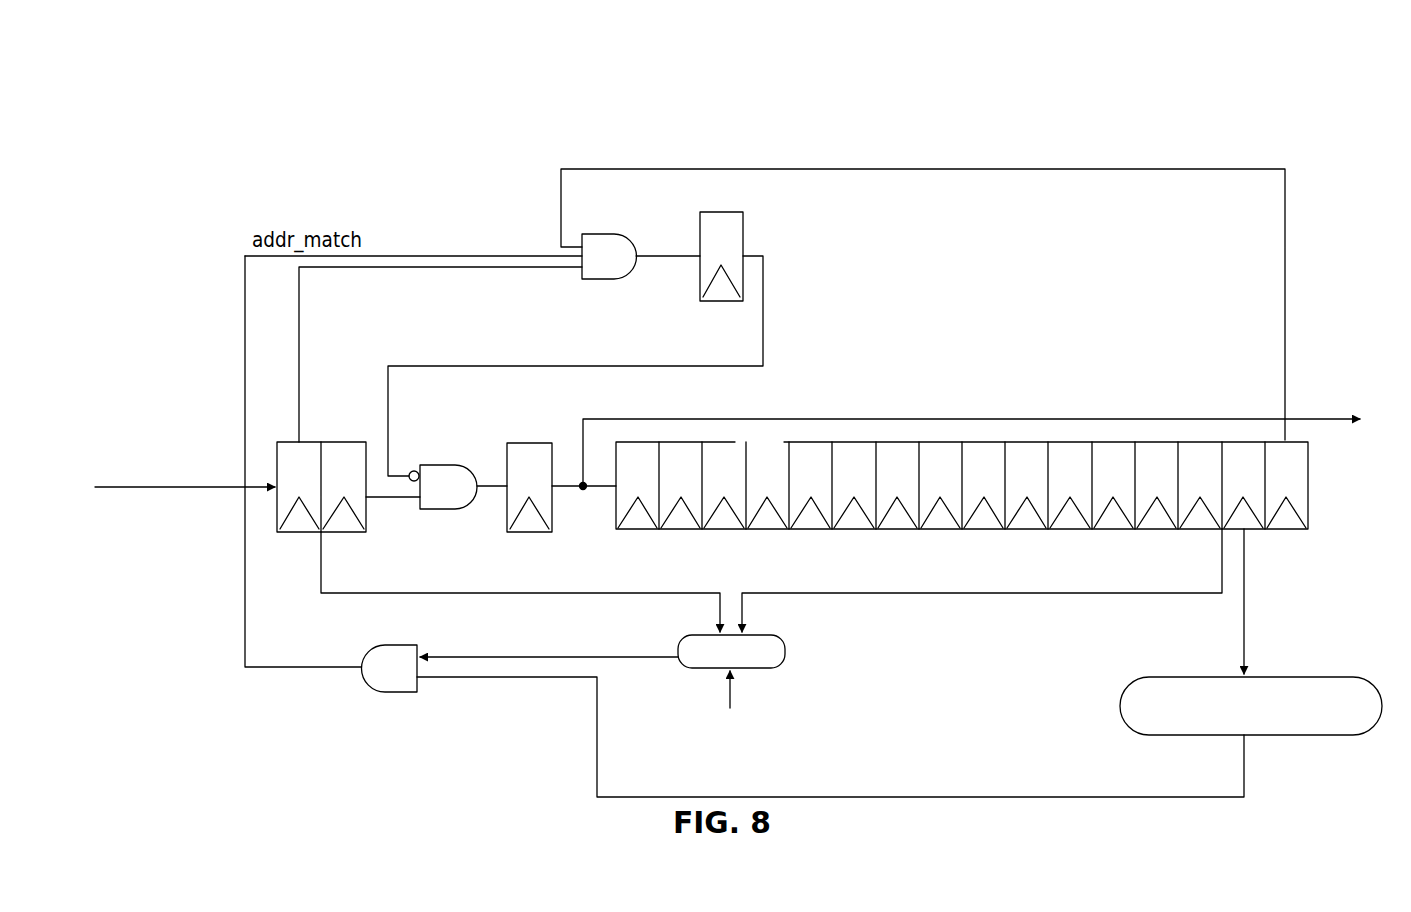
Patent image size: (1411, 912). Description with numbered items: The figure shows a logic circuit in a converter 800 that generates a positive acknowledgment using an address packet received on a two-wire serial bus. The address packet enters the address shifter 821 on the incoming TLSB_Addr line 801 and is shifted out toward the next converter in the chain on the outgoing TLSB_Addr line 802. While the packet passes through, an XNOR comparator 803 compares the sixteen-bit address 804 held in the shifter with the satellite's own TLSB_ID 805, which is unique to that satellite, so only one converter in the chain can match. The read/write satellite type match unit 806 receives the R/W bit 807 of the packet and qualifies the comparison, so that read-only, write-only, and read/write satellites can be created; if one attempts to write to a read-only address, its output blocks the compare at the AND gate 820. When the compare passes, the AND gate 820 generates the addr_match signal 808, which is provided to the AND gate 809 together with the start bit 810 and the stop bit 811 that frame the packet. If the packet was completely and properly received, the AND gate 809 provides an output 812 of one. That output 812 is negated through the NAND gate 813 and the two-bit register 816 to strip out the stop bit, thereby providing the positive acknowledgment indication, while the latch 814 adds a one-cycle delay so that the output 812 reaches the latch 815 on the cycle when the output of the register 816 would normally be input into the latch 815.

The converter 800 is at (411, 118).
The TLSB_Addr line 801 is at (170, 488).
The TLSB_Addr line 802 is at (1188, 417).
The XNOR gate 803 is at (787, 655).
The 16-bit address 804 is at (1048, 552).
The TLSB_ID 805 is at (735, 693).
The read/write satellite type match unit 806 is at (1312, 737).
The R/W bit 807 is at (1246, 615).
The addr_match signal 808 is at (430, 230).
The AND gate 809 is at (607, 280).
The start bit 810 is at (561, 210).
The stop bit 811 is at (420, 268).
The output 812 is at (660, 255).
The NAND gate 813 is at (440, 462).
The latch 814 is at (743, 223).
The latch 815 is at (527, 440).
The AND gate 816 is at (344, 440).
The AND gate 820 is at (393, 692).
The address shifter 821 is at (1360, 508).